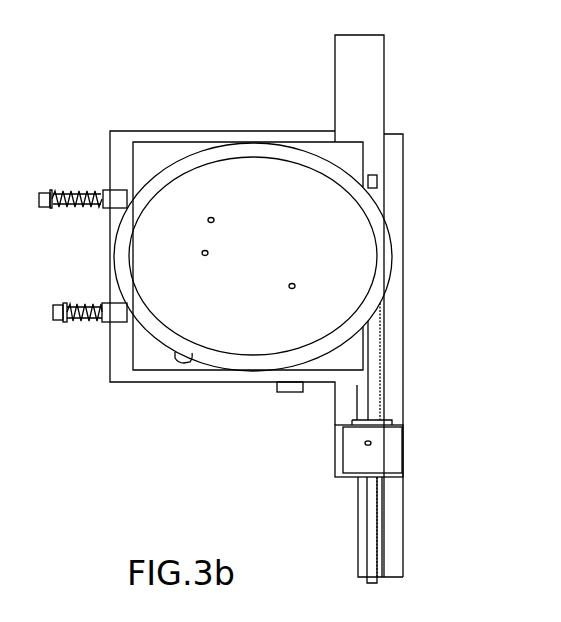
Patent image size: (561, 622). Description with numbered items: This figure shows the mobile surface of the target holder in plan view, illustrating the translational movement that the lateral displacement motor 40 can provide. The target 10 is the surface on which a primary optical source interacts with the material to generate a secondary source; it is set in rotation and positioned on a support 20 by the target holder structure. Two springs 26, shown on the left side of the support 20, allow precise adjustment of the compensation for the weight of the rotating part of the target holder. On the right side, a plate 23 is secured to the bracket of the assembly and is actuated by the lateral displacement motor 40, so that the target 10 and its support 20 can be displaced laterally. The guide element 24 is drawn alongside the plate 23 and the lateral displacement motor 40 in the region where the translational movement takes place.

The target 10 is at (340, 305).
The support 20 is at (383, 227).
The plate 23 is at (365, 60).
The guide rail 24 is at (393, 380).
The springs 26 is at (70, 190).
The lateral displacement motor 40 is at (355, 462).